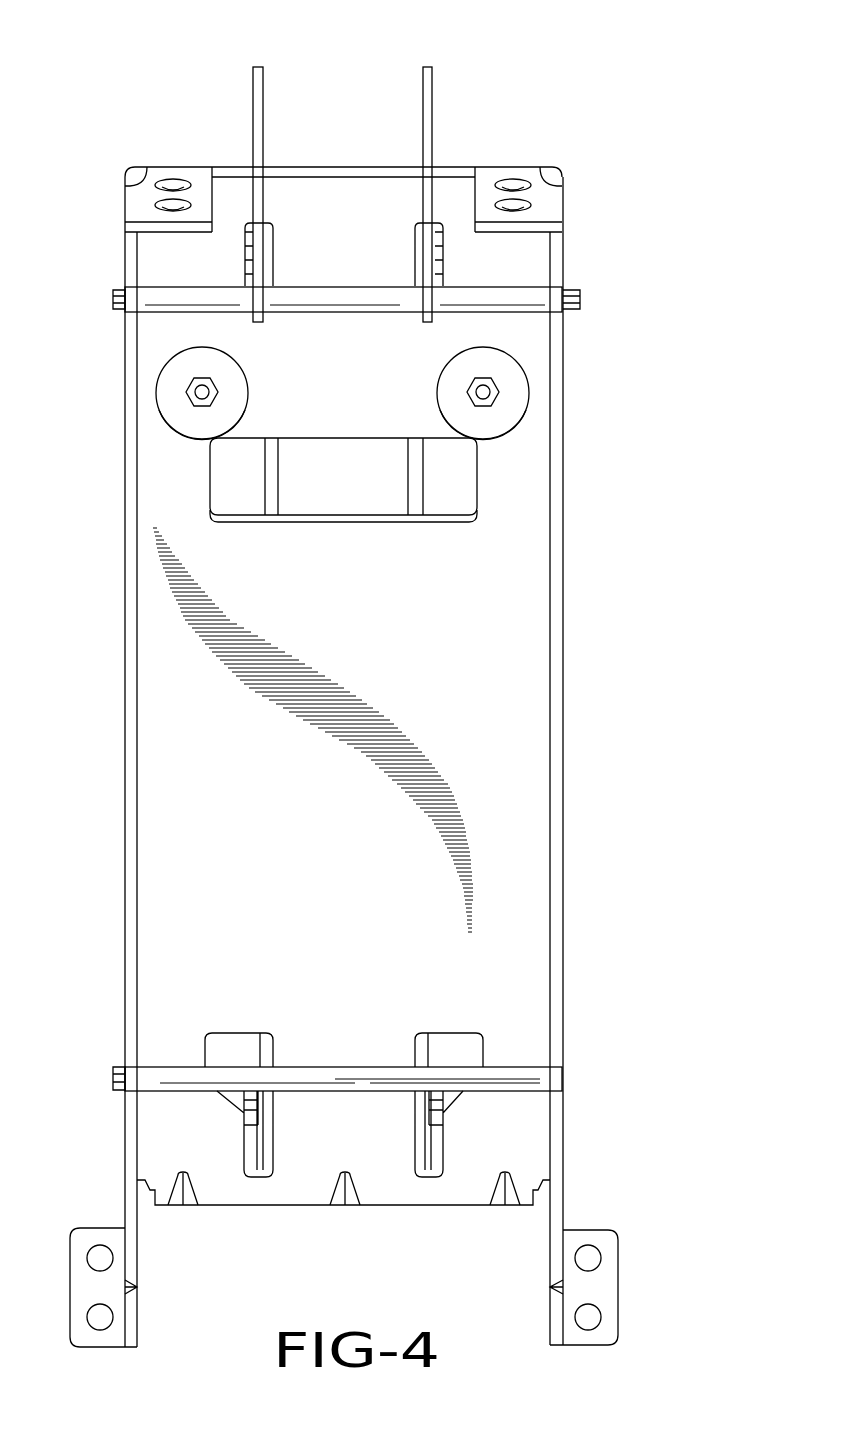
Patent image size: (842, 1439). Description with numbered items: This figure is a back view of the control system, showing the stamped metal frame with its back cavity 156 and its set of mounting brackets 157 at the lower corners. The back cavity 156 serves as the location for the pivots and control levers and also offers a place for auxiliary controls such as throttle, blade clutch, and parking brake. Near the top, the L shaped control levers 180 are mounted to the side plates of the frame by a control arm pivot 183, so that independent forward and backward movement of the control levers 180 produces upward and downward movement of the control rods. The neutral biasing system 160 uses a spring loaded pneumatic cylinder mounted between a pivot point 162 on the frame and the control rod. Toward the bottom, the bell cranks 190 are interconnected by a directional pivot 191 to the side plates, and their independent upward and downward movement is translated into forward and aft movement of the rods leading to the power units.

The neutral biasing system 160 is at (433, 58).
The control lever 180 is at (428, 140).
The control arm pivot 183 is at (113, 302).
The pivot point 162 is at (200, 400).
The back cavity 156 is at (497, 777).
The directional pivot 191 is at (563, 1082).
The bell crank 190 is at (260, 1107).
The mounting bracket 157 is at (603, 1290).